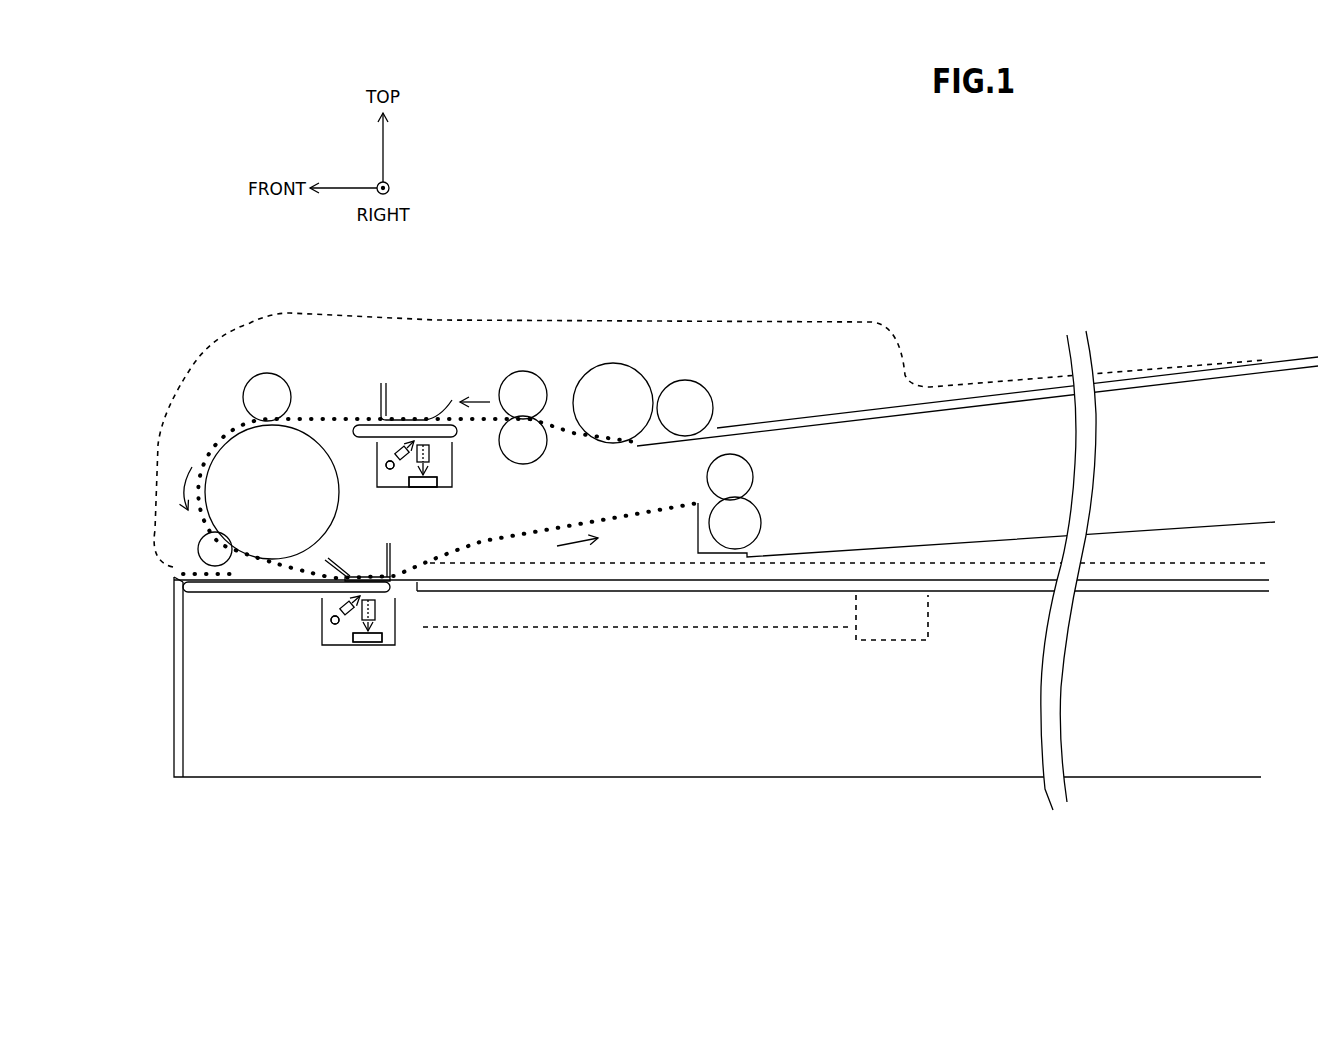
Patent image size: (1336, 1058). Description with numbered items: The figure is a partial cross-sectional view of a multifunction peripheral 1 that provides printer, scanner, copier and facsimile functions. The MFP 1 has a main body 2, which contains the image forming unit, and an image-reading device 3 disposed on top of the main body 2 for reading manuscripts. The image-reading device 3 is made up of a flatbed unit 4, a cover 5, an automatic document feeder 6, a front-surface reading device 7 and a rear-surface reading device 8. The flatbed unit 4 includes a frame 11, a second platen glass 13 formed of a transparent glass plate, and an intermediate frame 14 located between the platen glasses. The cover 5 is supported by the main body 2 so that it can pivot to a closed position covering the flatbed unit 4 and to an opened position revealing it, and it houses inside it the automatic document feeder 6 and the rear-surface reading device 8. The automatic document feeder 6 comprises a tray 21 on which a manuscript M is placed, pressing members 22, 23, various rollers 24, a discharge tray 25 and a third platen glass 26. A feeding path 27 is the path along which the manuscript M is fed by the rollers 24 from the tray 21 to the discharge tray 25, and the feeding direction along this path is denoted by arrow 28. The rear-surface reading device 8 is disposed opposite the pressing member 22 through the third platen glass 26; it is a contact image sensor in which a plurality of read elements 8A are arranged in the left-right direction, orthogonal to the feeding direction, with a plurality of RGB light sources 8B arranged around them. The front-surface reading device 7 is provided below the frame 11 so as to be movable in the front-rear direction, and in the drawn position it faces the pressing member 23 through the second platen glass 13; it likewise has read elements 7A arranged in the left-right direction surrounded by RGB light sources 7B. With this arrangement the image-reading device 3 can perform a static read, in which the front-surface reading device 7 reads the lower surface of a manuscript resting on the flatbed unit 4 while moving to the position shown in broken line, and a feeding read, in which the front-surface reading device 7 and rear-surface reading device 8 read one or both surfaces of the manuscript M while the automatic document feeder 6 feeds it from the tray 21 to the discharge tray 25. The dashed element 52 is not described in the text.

The multifunction peripheral 1 is at (742, 173).
The main body 2 is at (172, 658).
The image-reading device 3 is at (166, 592).
The flatbed unit 4 is at (914, 574).
The cover 5 is at (435, 318).
The automatic document feeder 6 is at (205, 416).
The front-surface reading device 7 is at (320, 615).
The read elements 7A is at (363, 645).
The RGB light sources 7B is at (330, 623).
The rear-surface reading device 8 is at (452, 472).
The read elements 8A is at (440, 488).
The RGB light sources 8B is at (383, 463).
The frame 11 is at (173, 572).
The second platen glass 13 is at (223, 591).
The intermediate frame 14 is at (425, 593).
The tray 21 is at (1182, 380).
The pressing member 22 is at (383, 383).
The pressing member 23 is at (387, 547).
The rollers 24 is at (258, 397).
The discharge tray 25 is at (1171, 532).
The third platen glass 26 is at (445, 425).
The feeding path 27 is at (575, 518).
The arrow 28 is at (185, 478).
The detection line 52 is at (552, 592).
The manuscript M is at (863, 410).